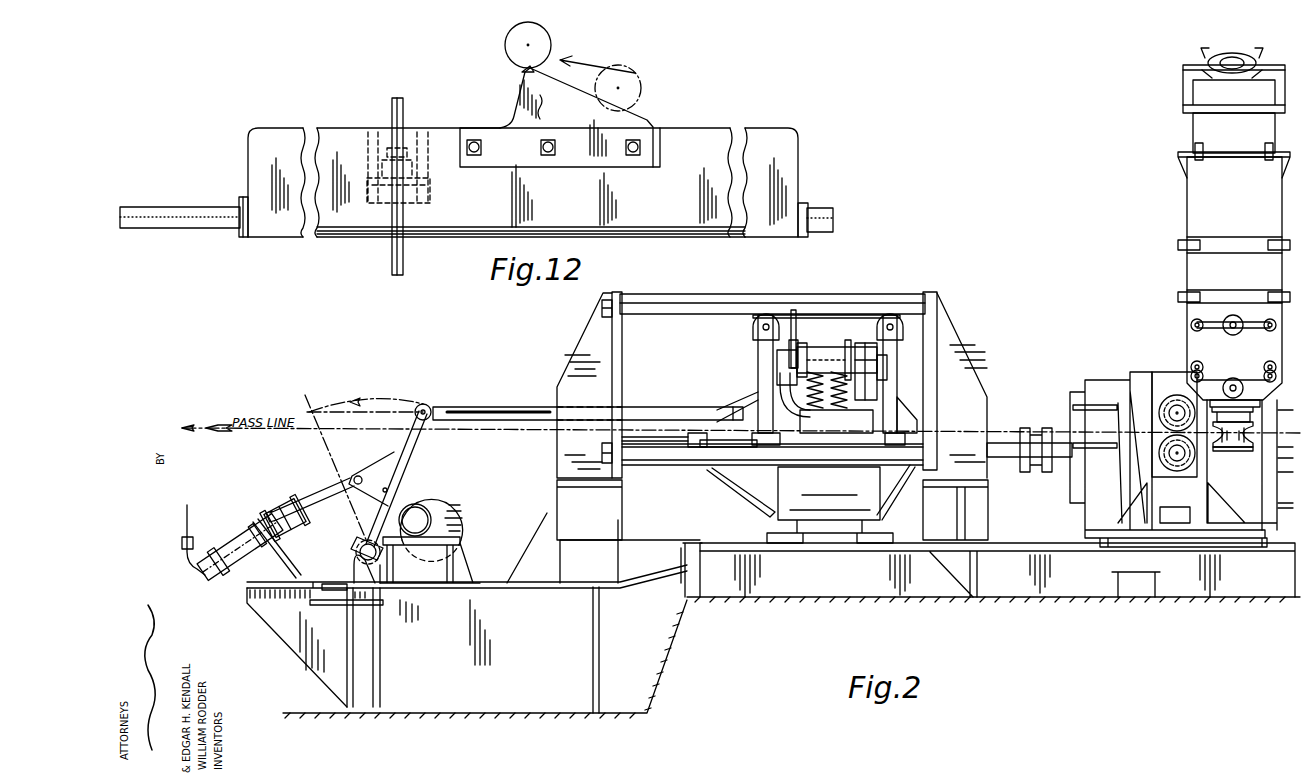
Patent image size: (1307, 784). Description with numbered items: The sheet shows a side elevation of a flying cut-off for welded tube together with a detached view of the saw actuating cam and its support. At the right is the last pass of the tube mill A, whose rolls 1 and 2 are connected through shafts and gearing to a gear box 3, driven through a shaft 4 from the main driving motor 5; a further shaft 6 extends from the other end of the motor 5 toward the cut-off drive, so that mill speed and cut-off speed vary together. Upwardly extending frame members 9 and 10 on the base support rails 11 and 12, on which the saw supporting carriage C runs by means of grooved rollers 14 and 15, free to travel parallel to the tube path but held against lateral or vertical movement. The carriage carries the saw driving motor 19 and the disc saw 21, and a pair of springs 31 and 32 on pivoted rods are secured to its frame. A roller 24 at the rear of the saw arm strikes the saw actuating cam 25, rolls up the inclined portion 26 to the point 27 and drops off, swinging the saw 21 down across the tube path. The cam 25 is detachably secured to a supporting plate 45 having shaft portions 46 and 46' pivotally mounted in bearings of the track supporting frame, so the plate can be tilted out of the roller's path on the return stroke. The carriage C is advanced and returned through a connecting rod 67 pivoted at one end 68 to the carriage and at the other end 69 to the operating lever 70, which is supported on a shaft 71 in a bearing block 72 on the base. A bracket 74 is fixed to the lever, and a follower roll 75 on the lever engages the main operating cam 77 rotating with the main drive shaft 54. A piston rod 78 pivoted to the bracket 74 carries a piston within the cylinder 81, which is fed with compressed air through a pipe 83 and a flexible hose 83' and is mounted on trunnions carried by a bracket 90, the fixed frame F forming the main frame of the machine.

In FIG. 12, the roller 24 is at (552, 40).
In FIG. 12, the saw actuating cam 25 is at (620, 128).
In FIG. 12, the inclined portion 26 is at (548, 97).
In FIG. 12, the point 27 is at (522, 72).
In FIG. 12, the supporting plate 45 is at (688, 152).
In FIG. 12, the shaft portion 46 is at (184, 199).
In FIG. 12, the shaft portion 46' is at (833, 205).
In FIG. 2, the roll 1 is at (1240, 446).
In FIG. 2, the roll 2 is at (1174, 397).
In FIG. 2, the gear box 3 is at (1110, 397).
In FIG. 2, the shaft 4 is at (1003, 440).
In FIG. 2, the main driving motor 5 is at (735, 492).
In FIG. 2, the shaft 6 is at (690, 435).
In FIG. 2, the frame member 9 is at (600, 357).
In FIG. 2, the frame member 10 is at (960, 392).
In FIG. 2, the rail 11 is at (648, 304).
In FIG. 2, the rail 12 is at (672, 463).
In FIG. 2, the roller 14 is at (755, 330).
In FIG. 2, the roller 15 is at (910, 417).
In FIG. 2, the saw driving motor 19 is at (797, 382).
In FIG. 2, the disc saw 21 is at (797, 330).
In FIG. 2, the spring 31 is at (818, 433).
In FIG. 2, the spring 32 is at (840, 433).
In FIG. 2, the main drive shaft 54 is at (418, 507).
In FIG. 2, the connecting rod 67 is at (495, 407).
In FIG. 2, the end 68 is at (782, 404).
In FIG. 2, the end 69 is at (423, 404).
In FIG. 2, the operating lever 70 is at (410, 449).
In FIG. 2, the shaft 71 is at (356, 558).
In FIG. 2, the bearing block 72 is at (356, 576).
In FIG. 2, the bracket 74 is at (380, 472).
In FIG. 2, the follower roll 75 is at (360, 486).
In FIG. 2, the main operating cam 77 is at (440, 502).
In FIG. 2, the piston rod 78 is at (315, 507).
In FIG. 2, the cylinder 81 is at (272, 512).
In FIG. 2, the pipe 83 is at (205, 527).
In FIG. 2, the flexible hose 83' is at (240, 547).
In FIG. 2, the bracket 90 is at (275, 555).
In FIG. 2, the last pass of tube mill A is at (1205, 224).
In FIG. 2, the saw supporting carriage C is at (760, 342).
In FIG. 2, the fixed frame F is at (446, 560).